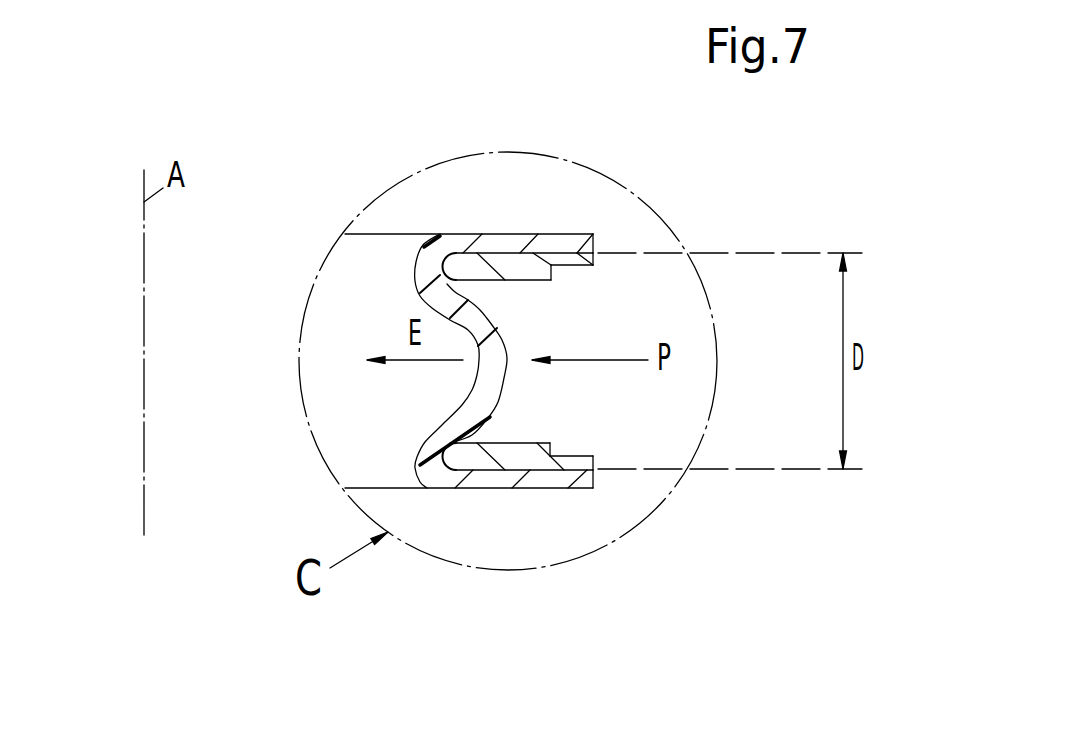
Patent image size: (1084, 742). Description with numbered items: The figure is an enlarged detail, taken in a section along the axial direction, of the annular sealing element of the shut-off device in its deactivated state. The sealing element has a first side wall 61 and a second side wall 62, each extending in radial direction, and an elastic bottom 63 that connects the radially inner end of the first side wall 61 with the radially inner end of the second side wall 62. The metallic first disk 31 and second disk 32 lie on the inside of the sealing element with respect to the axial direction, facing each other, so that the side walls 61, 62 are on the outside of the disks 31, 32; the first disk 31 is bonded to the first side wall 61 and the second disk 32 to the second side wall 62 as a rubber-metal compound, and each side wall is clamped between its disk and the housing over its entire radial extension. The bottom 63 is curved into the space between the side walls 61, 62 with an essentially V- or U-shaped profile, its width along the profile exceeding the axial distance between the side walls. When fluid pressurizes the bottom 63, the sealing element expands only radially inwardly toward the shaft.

The first side wall 61 is at (492, 476).
The second side wall 62 is at (505, 242).
The elastic bottom 63 is at (488, 381).
The first disk 31 is at (537, 437).
The second disk 32 is at (558, 273).